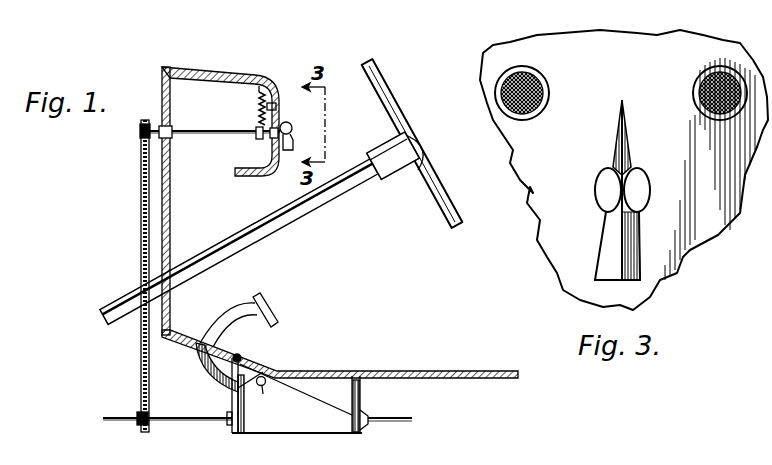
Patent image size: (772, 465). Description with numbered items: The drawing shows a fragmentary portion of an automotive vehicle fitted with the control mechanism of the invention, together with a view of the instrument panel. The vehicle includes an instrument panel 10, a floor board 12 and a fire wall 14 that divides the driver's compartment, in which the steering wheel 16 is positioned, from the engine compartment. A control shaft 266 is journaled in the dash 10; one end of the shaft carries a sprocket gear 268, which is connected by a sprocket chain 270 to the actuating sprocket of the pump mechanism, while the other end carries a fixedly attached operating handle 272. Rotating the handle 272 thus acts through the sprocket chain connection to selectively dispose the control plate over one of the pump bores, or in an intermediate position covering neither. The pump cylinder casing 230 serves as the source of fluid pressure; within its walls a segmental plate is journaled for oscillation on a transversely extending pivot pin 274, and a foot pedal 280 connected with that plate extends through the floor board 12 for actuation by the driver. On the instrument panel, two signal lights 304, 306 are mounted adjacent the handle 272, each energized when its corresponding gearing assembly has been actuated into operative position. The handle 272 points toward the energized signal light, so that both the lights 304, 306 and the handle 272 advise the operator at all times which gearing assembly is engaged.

In FIG. 1, the instrument panel 10 is at (272, 153).
In FIG. 3, the instrument panel 10 is at (624, 170).
In FIG. 1, the floor board 12 is at (326, 372).
In FIG. 1, the fire wall 14 is at (168, 233).
In FIG. 1, the steering wheel 16 is at (434, 188).
In FIG. 1, the pump cylinder casing 230 is at (322, 395).
In FIG. 1, the control shaft 266 is at (195, 131).
In FIG. 1, the sprocket gear 268 is at (141, 131).
In FIG. 1, the sprocket chain 270 is at (143, 242).
In FIG. 1, the operating handle 272 is at (284, 138).
In FIG. 3, the operating handle 272 is at (634, 240).
In FIG. 1, the pivot pin 274 is at (267, 397).
In FIG. 1, the foot pedal 280 is at (229, 318).
In FIG. 3, the signal light 304 is at (548, 89).
In FIG. 3, the signal light 306 is at (698, 87).